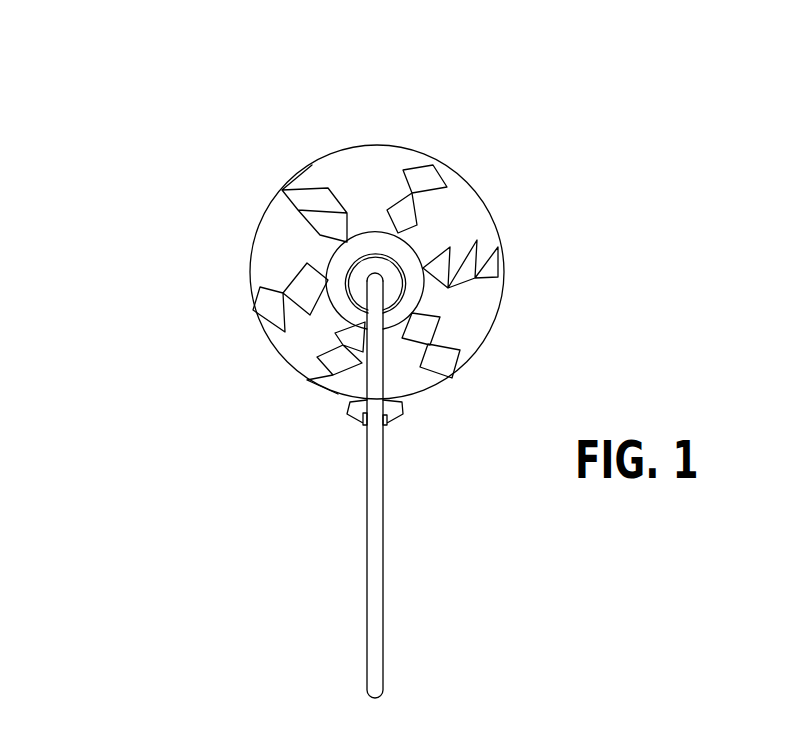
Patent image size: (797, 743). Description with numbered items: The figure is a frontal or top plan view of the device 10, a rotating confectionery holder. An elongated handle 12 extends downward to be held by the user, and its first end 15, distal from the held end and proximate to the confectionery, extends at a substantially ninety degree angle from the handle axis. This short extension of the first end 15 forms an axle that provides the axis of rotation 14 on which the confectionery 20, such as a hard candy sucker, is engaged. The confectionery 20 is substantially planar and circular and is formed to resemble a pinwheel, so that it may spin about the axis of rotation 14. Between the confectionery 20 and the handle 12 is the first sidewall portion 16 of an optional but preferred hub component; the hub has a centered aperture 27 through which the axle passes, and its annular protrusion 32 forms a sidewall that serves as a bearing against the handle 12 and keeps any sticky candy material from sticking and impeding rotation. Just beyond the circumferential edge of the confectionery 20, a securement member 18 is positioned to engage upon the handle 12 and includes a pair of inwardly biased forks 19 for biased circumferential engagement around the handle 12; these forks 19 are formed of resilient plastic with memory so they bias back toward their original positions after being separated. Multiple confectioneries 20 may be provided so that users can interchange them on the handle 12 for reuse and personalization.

The device 10 is at (192, 93).
The handle 12 is at (375, 600).
The axis of rotation 14 is at (384, 282).
The first end 15 is at (372, 303).
The first sidewall portion 16 is at (330, 260).
The securement member 18 is at (355, 415).
The inwardly biased forks 19 is at (387, 427).
The confectionery 20 is at (393, 155).
The centered aperture 27 is at (383, 281).
The annular protrusion 32 is at (337, 298).